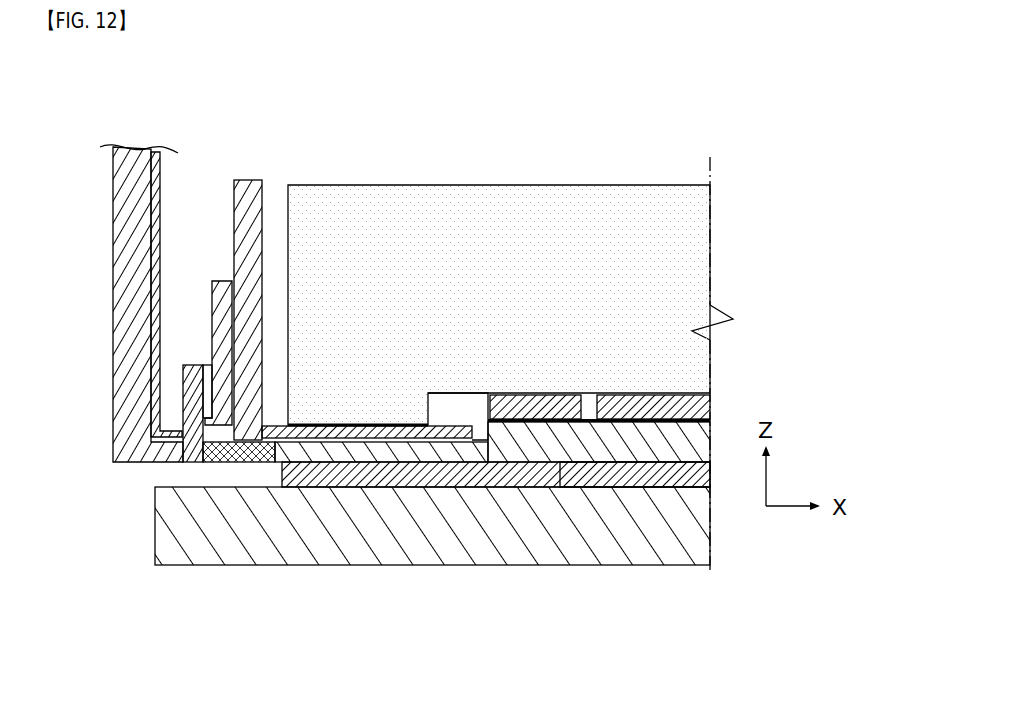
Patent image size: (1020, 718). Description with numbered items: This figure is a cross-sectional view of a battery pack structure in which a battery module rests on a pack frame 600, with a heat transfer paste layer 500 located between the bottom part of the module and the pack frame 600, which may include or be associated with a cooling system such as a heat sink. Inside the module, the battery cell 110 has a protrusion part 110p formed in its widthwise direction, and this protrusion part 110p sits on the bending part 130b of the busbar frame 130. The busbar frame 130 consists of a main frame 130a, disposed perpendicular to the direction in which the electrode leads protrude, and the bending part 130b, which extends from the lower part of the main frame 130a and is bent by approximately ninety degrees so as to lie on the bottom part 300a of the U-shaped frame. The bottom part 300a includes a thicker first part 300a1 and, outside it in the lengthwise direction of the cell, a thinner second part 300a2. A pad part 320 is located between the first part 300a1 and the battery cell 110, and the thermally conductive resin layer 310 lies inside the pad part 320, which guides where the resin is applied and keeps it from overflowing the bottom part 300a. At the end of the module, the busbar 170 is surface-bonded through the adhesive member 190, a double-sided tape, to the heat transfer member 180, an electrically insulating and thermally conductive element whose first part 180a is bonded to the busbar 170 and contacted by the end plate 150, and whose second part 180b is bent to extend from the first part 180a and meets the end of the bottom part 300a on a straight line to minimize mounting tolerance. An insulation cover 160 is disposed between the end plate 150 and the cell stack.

The battery cell 110 is at (493, 215).
The protrusion part 110p is at (358, 405).
The busbar frame 130 is at (543, 396).
The main frame 130a is at (250, 190).
The bending part 130b is at (443, 430).
The end plate 150 is at (125, 183).
The insulation cover 160 is at (155, 232).
The busbar 170 is at (215, 312).
The heat transfer member 180 is at (216, 520).
The first part 180a is at (193, 408).
The second part 180b is at (247, 452).
The adhesive member 190 is at (207, 388).
The bottom part 300a is at (568, 397).
The first part 300a1 is at (623, 443).
The second part 300a2 is at (308, 452).
The thermally conductive resin layer 310 is at (675, 410).
The pad part 320 is at (537, 407).
The heat transfer paste layer 500 is at (497, 477).
The pack frame 600 is at (573, 475).